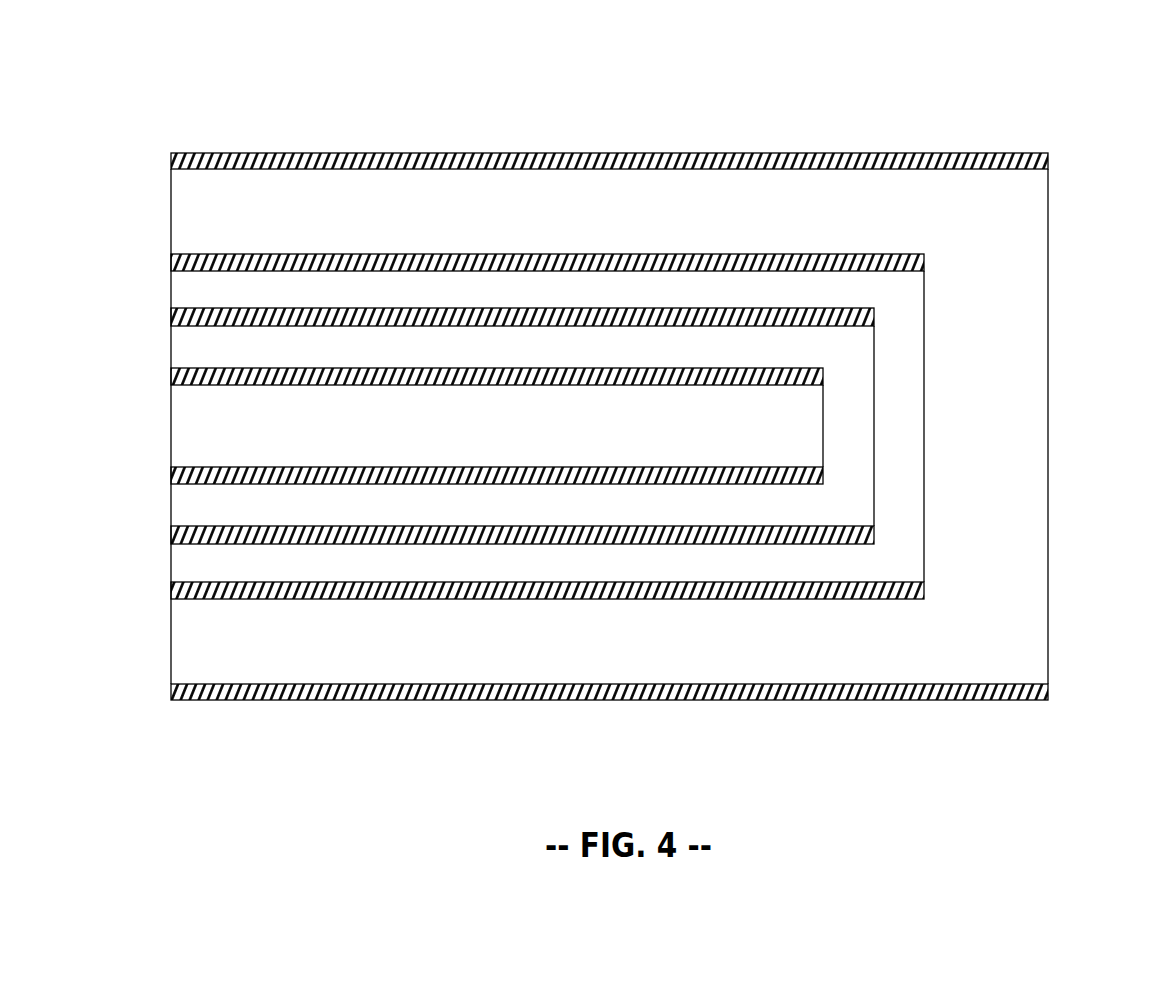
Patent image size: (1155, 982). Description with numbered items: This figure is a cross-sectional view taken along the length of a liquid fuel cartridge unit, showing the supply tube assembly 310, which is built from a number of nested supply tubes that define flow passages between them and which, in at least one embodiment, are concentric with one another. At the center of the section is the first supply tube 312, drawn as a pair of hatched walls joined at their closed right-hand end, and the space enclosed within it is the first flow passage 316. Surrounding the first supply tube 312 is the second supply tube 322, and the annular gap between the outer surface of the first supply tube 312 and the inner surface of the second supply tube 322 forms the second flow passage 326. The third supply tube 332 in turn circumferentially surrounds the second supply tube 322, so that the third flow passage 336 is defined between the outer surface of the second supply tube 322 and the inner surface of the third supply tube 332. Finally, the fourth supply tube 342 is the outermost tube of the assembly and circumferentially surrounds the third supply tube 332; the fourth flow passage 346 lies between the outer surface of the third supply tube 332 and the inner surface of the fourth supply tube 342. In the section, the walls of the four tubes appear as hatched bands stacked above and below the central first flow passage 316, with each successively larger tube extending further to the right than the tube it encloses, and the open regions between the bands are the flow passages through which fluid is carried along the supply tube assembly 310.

The supply tube assembly 310 is at (983, 107).
The first supply tube 312 is at (197, 367).
The first flow passage 316 is at (612, 438).
The second supply tube 322 is at (200, 309).
The second flow passage 326 is at (423, 346).
The third supply tube 332 is at (203, 255).
The third flow passage 336 is at (738, 292).
The fourth supply tube 342 is at (205, 153).
The fourth flow passage 346 is at (612, 222).